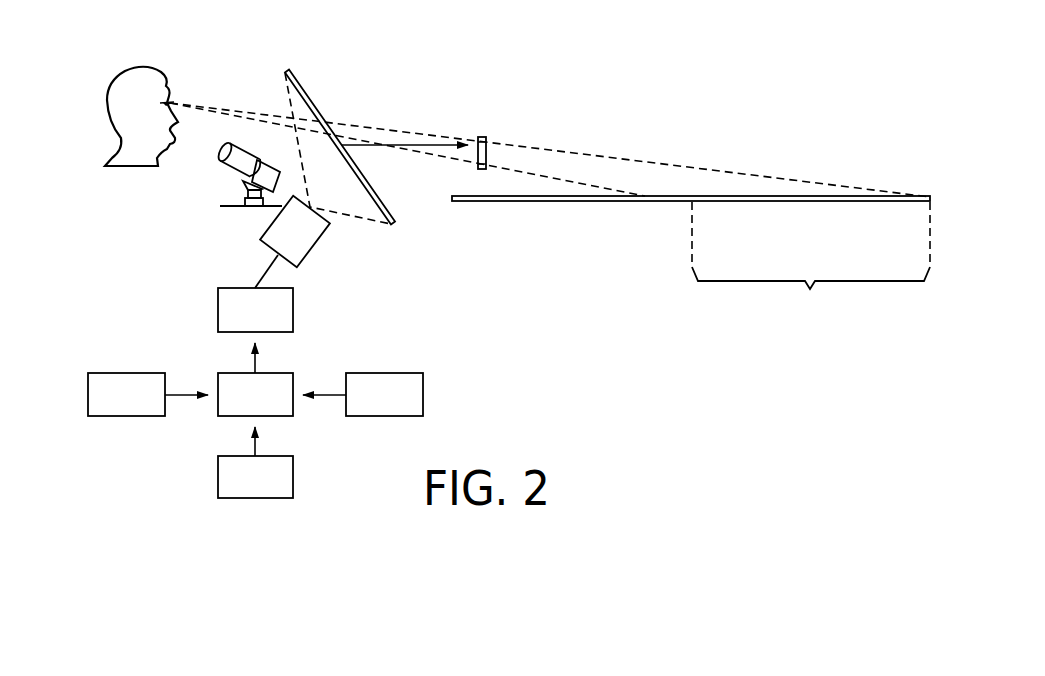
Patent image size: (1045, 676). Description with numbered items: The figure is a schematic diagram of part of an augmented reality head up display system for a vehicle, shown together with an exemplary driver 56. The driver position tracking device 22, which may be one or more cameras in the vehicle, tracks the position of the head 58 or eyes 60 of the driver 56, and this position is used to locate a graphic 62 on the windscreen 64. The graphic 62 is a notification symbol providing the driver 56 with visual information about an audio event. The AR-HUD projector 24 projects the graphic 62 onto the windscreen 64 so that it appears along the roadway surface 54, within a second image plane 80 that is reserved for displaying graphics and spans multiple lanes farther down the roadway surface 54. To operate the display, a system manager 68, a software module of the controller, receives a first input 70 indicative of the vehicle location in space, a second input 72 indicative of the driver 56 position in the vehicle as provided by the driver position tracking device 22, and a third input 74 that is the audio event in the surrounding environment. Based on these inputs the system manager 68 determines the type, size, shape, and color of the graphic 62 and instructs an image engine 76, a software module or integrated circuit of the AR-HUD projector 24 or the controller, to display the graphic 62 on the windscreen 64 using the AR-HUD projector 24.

The driver position tracking device 22 is at (243, 183).
The AR-HUD projector 24 is at (313, 244).
The roadway surface 54 is at (562, 202).
The driver 56 is at (102, 70).
The head 58 is at (143, 70).
The eyes 60 is at (172, 100).
The graphic 62 is at (480, 137).
The windscreen 64 is at (297, 70).
The system manager 68 is at (271, 408).
The first input 70 is at (271, 491).
The second input 72 is at (400, 408).
The third input 74 is at (142, 408).
The image engine 76 is at (271, 324).
The second image plane 80 is at (811, 261).